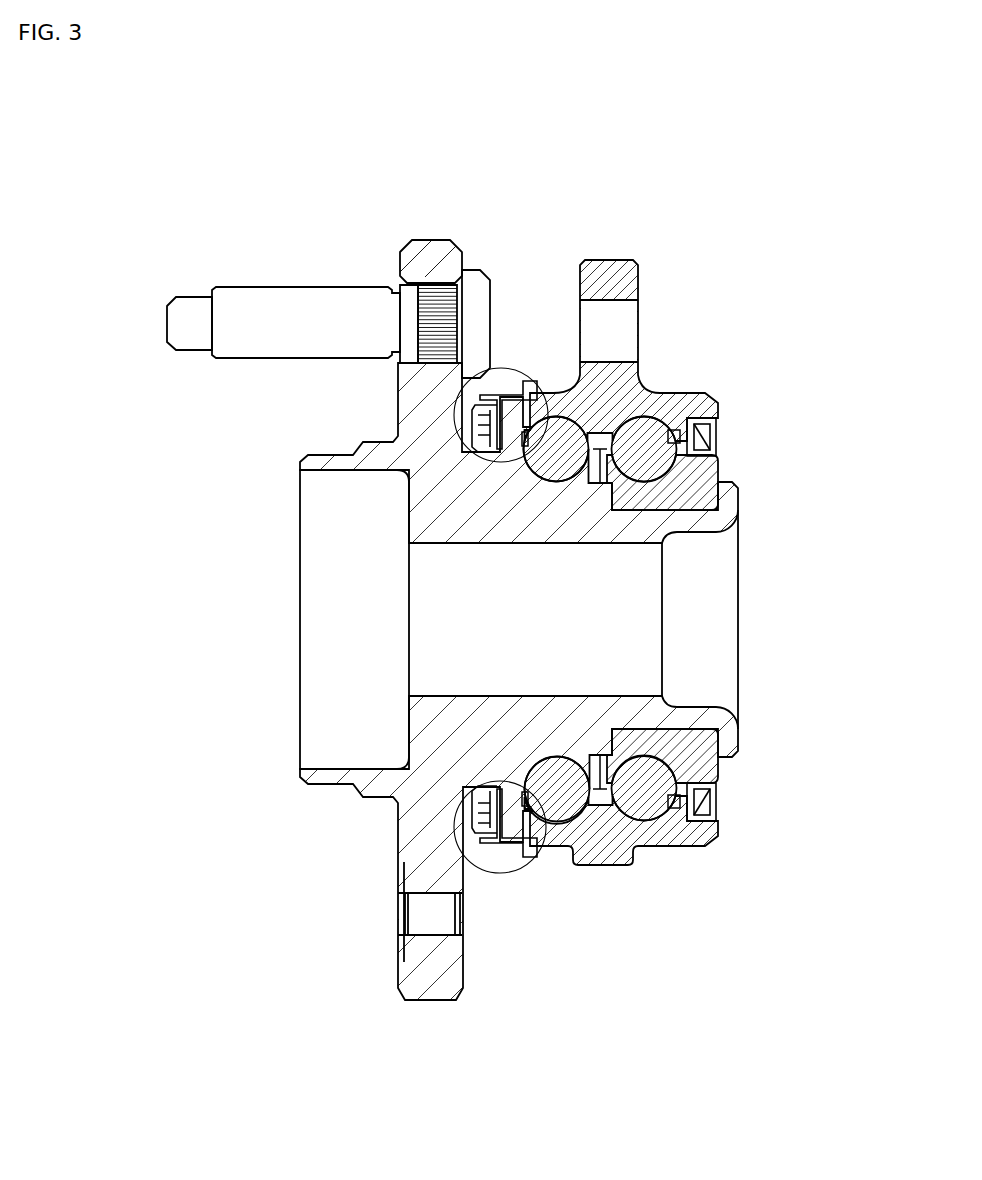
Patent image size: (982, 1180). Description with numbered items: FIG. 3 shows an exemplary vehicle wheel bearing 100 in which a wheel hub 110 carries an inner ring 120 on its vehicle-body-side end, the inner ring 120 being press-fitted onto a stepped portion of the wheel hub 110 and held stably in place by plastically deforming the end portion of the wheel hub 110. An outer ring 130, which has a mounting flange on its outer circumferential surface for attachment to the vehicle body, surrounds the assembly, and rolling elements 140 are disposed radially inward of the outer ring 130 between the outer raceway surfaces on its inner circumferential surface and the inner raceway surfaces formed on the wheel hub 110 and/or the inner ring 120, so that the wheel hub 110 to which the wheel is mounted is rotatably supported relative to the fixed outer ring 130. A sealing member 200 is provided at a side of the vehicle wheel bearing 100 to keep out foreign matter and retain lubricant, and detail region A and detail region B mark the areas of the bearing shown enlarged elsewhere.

The vehicle wheel bearing 100 is at (509, 541).
The wheel hub 110 is at (422, 503).
The inner ring 120 is at (720, 460).
The outer ring 130 is at (670, 400).
The rolling elements 140 is at (560, 777).
The sealing member 200 is at (506, 375).
The detail region A is at (460, 413).
The detail region B is at (452, 822).